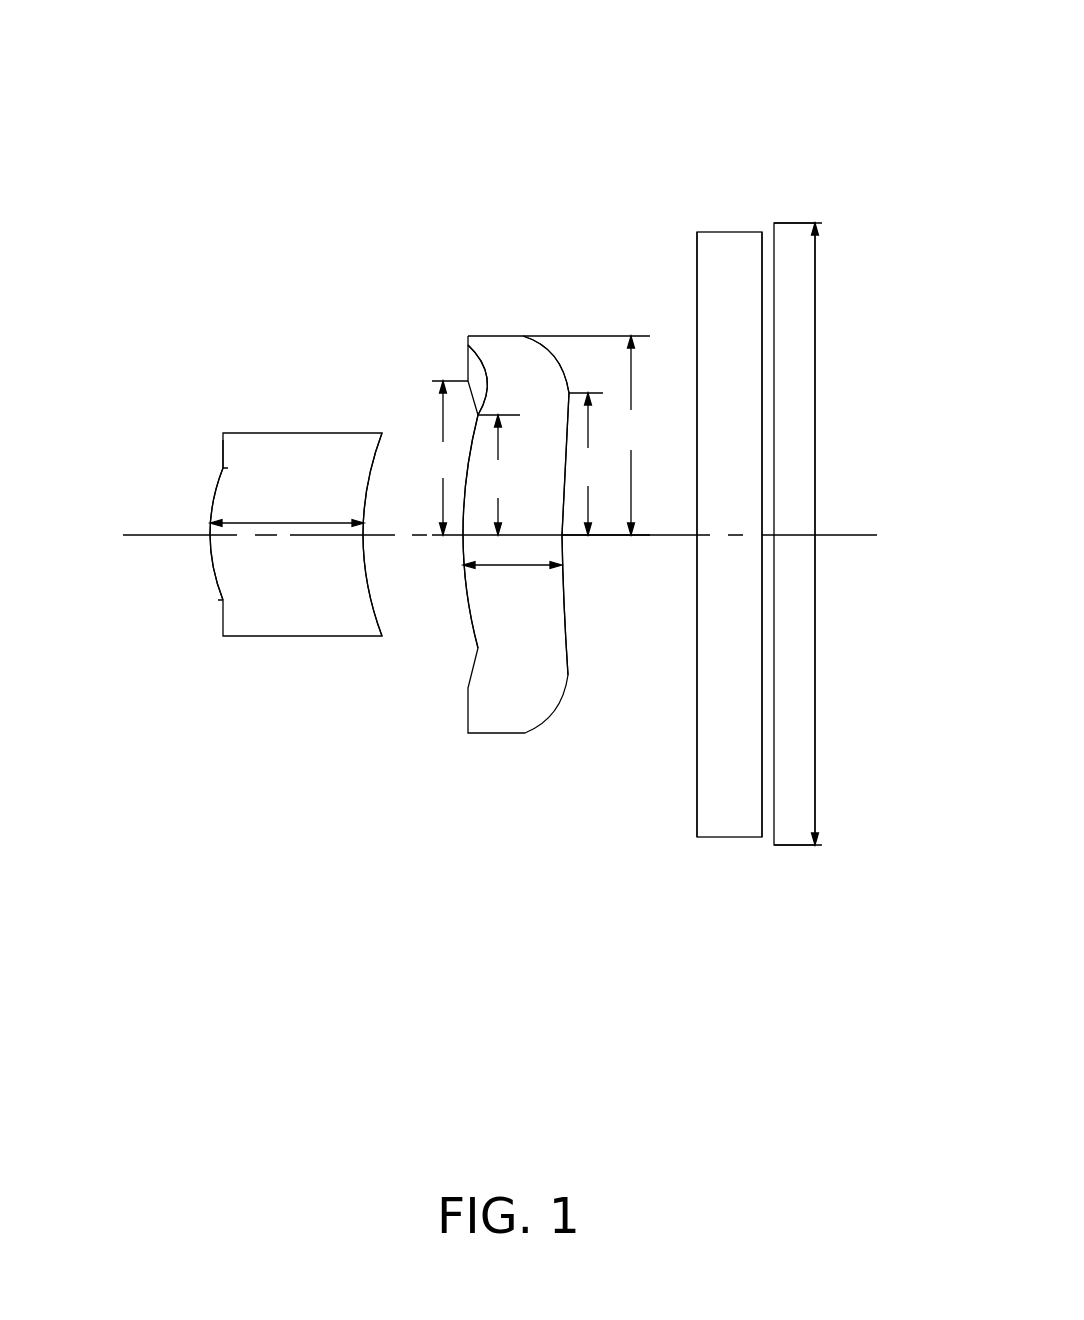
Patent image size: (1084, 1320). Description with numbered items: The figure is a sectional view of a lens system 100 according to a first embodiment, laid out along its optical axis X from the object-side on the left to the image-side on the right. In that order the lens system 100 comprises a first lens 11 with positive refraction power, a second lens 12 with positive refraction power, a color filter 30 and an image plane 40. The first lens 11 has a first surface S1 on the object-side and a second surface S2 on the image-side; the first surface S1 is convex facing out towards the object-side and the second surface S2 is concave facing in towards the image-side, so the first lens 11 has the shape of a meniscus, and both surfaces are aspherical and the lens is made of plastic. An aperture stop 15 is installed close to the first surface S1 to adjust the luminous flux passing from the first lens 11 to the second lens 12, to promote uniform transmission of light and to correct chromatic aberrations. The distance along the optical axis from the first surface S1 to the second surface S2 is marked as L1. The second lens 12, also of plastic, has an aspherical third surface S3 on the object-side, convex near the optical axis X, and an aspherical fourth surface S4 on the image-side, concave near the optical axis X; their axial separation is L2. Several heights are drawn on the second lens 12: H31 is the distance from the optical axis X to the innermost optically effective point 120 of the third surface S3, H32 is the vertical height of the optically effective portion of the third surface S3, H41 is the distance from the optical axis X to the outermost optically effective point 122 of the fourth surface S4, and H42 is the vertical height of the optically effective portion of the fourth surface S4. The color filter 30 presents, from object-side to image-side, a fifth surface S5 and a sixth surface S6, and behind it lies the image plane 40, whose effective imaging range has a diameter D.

The lens system 100 is at (497, 52).
The optical axis X is at (480, 536).
The first lens 11 is at (292, 433).
The aperture stop 15 is at (221, 468).
The first surface S1 is at (210, 563).
The second surface S2 is at (368, 585).
The distance from first surface to second surface L1 is at (287, 509).
The second lens 12 is at (495, 336).
The innermost optically effective point 120 is at (468, 347).
The outermost optically effective point 122 is at (568, 380).
The third surface S3 is at (476, 648).
The fourth surface S4 is at (568, 675).
The distance from third surface to fourth surface L2 is at (512, 552).
The distance to innermost optically effective point of third surface H31 is at (502, 475).
The vertical height of optically effective portion of third surface H32 is at (441, 458).
The distance to outermost optically effective point of fourth surface H41 is at (596, 464).
The vertical height of optically effective portion of fourth surface H42 is at (591, 435).
The color filter 30 is at (730, 232).
The fifth surface S5 is at (697, 590).
The sixth surface S6 is at (762, 782).
The image plane 40 is at (775, 229).
The diameter of effective imaging range D is at (807, 534).